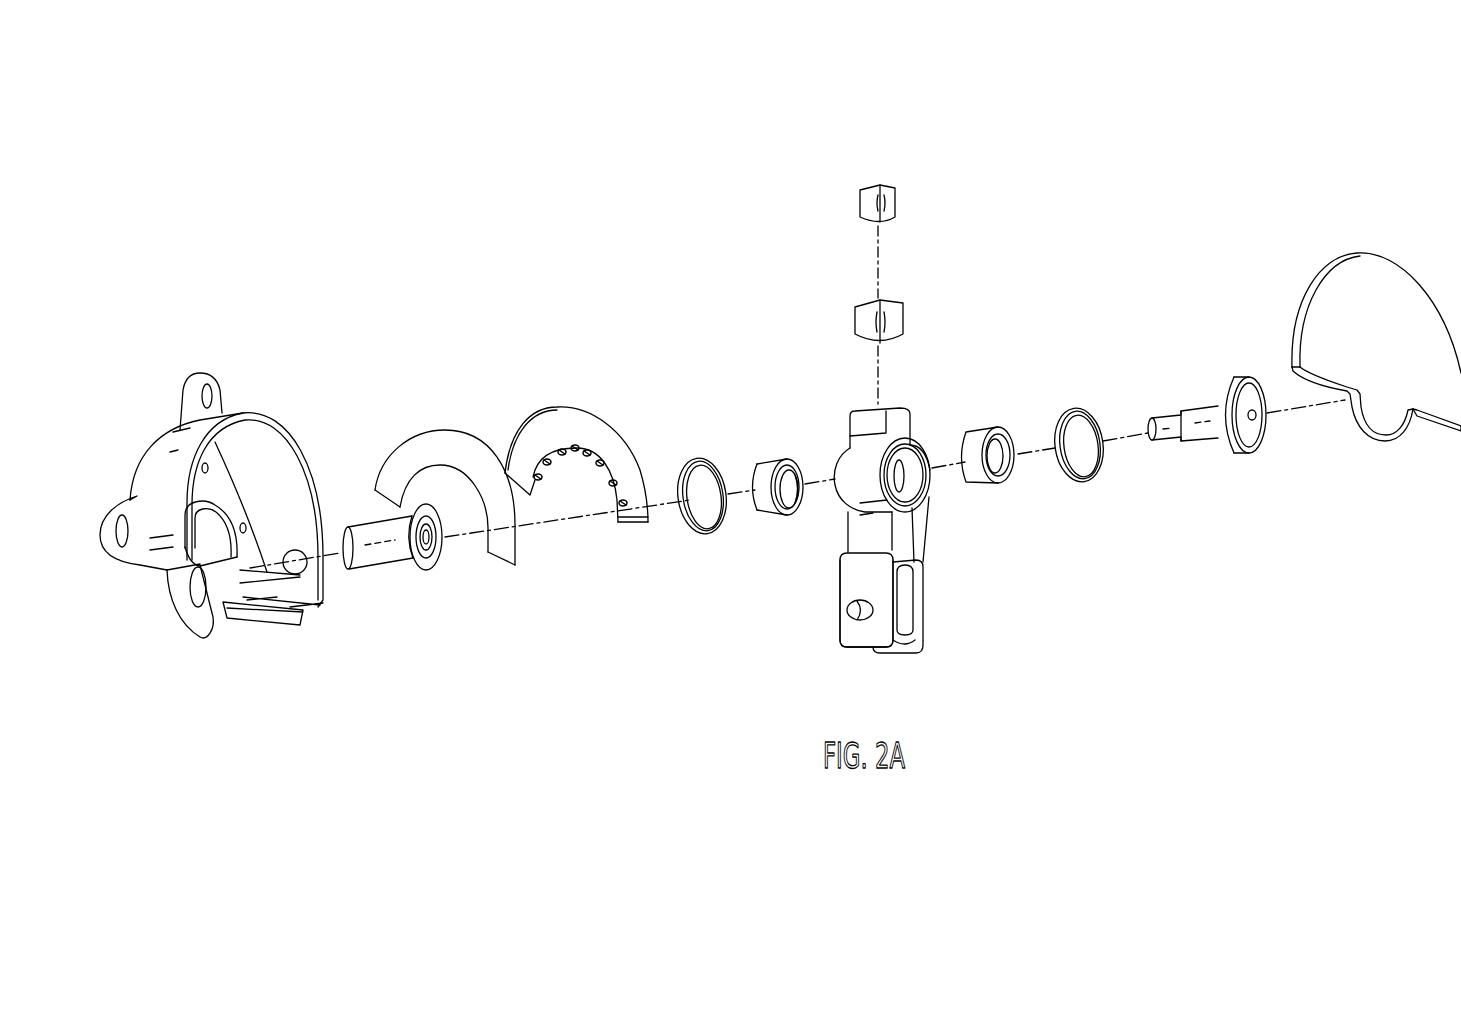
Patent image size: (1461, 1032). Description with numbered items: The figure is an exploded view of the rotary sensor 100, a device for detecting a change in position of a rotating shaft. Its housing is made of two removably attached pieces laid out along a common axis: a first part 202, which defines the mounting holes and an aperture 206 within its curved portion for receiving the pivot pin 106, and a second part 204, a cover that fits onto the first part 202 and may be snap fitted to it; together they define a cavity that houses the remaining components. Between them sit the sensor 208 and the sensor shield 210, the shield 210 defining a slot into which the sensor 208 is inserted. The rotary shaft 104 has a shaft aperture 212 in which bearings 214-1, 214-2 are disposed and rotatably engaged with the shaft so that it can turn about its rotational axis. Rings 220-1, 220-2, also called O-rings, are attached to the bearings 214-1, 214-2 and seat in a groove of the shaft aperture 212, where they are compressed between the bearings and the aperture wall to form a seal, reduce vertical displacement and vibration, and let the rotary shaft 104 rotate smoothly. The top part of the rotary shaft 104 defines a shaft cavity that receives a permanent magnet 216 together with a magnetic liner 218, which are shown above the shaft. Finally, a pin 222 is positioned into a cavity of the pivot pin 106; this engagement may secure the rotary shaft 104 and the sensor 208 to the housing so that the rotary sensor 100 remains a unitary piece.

The rotary sensor 100 is at (193, 318).
The rotary shaft 104 is at (840, 588).
The pivot pin 106 is at (362, 522).
The first part 202 is at (161, 434).
The second part 204 is at (1360, 262).
The aperture 206 is at (213, 615).
The sensor 208 is at (557, 404).
The sensor shield 210 is at (447, 430).
The shaft aperture 212 is at (942, 489).
The bearing 214-1 is at (773, 460).
The bearing 214-2 is at (992, 427).
The permanent magnet 216 is at (858, 203).
The magnetic liner 218 is at (857, 321).
The ring 220-1 is at (707, 460).
The ring 220-2 is at (1076, 408).
The pin 222 is at (1197, 415).